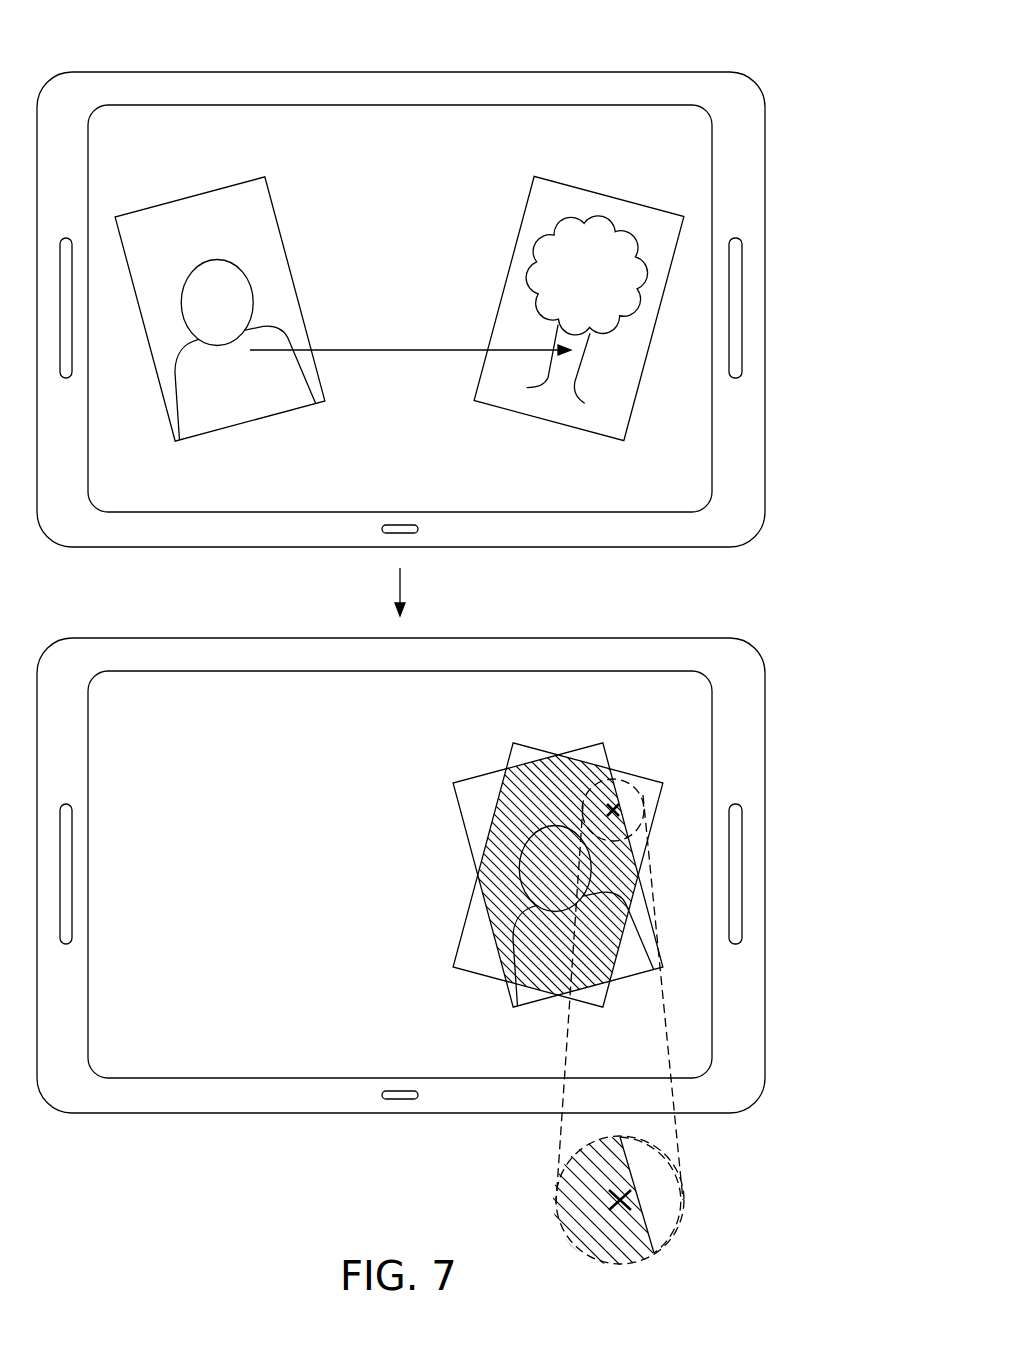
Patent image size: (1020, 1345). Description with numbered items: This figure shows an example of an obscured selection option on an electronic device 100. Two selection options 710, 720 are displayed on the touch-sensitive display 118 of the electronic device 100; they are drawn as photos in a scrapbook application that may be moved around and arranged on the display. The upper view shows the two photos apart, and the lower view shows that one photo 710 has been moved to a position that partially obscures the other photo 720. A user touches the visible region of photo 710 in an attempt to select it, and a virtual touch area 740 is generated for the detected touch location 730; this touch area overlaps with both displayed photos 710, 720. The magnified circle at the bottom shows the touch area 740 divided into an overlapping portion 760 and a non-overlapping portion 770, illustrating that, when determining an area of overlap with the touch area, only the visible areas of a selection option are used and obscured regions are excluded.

The electronic device 100 is at (717, 52).
The touch-sensitive display 118 is at (167, 104).
The selection option 710 is at (273, 207).
The selection option 720 is at (525, 207).
The detected touch location 730 is at (621, 812).
The virtual touch area 740 is at (643, 800).
The overlapping portion 760 is at (570, 1217).
The non-overlapping portion 770 is at (668, 1212).